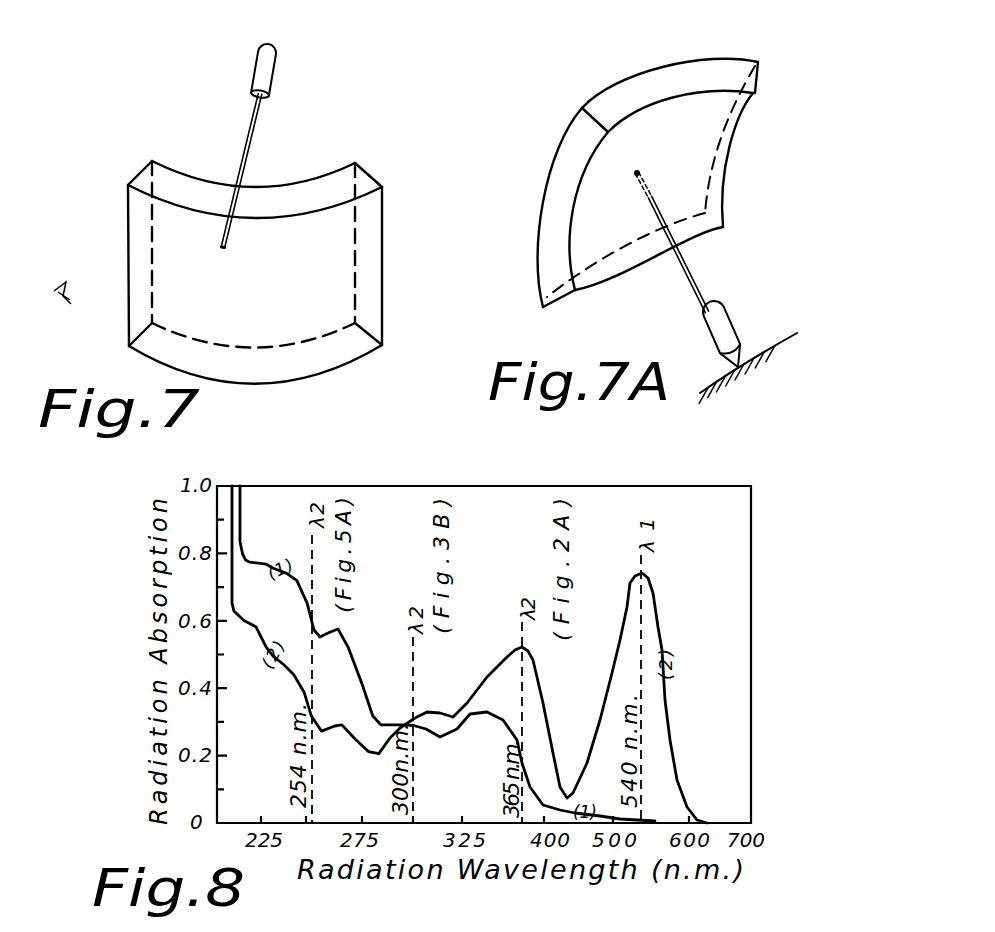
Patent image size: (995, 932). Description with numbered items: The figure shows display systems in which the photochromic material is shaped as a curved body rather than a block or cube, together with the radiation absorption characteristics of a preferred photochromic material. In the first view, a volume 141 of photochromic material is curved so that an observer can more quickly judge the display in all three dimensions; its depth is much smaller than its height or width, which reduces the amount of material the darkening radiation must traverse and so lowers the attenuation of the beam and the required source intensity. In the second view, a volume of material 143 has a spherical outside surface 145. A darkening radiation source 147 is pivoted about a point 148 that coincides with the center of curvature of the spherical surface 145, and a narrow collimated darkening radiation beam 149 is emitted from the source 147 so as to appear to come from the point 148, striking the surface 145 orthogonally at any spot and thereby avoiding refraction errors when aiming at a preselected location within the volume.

In FIG. 7, the volume of photochromic material 141 is at (362, 187).
In FIG. 7A, the volume of material 143 is at (738, 65).
In FIG. 7A, the spherical outside surface 145 is at (693, 137).
In FIG. 7A, the darkening radiation source 147 is at (722, 323).
In FIG. 7A, the point 148 is at (798, 333).
In FIG. 7A, the narrow collimated darkening radiation beam 149 is at (656, 181).